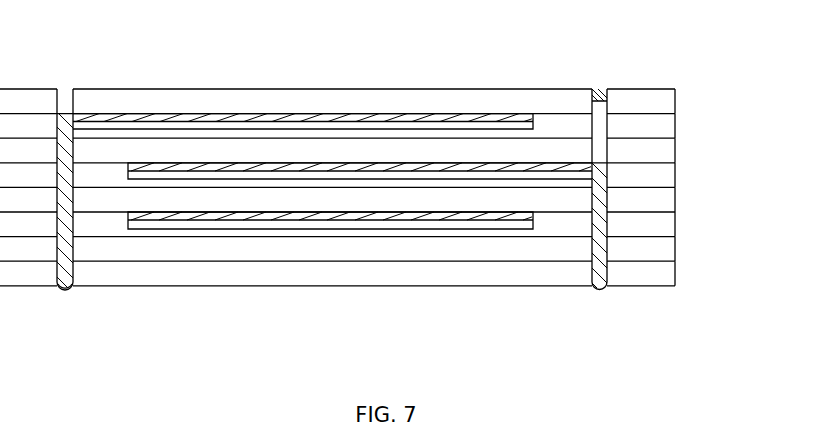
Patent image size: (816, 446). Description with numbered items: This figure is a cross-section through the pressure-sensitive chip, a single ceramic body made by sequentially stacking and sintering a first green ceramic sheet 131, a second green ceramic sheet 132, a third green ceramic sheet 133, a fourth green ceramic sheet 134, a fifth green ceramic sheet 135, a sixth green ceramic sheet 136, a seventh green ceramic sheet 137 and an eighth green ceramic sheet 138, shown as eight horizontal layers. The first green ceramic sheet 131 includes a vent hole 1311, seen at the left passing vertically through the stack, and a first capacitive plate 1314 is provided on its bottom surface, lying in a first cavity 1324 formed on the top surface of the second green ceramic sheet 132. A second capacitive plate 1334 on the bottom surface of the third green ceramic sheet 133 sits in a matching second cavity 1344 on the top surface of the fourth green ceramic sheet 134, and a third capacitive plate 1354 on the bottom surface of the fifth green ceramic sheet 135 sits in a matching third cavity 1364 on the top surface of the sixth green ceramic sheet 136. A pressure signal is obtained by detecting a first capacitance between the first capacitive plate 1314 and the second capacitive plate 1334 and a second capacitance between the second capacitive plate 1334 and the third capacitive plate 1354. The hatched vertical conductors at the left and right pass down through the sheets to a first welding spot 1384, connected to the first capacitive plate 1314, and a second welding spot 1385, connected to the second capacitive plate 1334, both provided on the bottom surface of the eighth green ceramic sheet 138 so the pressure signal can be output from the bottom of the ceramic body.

The first green ceramic sheet 131 is at (675, 106).
The second green ceramic sheet 132 is at (675, 131).
The third green ceramic sheet 133 is at (675, 155).
The fourth green ceramic sheet 134 is at (675, 180).
The fifth green ceramic sheet 135 is at (675, 204).
The sixth green ceramic sheet 136 is at (675, 229).
The seventh green ceramic sheet 137 is at (675, 254).
The eighth green ceramic sheet 138 is at (675, 278).
The vent hole 1311 is at (67, 102).
The first capacitive plate 1314 is at (312, 112).
The first cavity 1324 is at (303, 76).
The second capacitive plate 1334 is at (553, 163).
The second cavity 1344 is at (360, 101).
The third capacitive plate 1354 is at (368, 222).
The third cavity 1364 is at (330, 287).
The first welding spot 1384 is at (62, 293).
The second welding spot 1385 is at (593, 293).